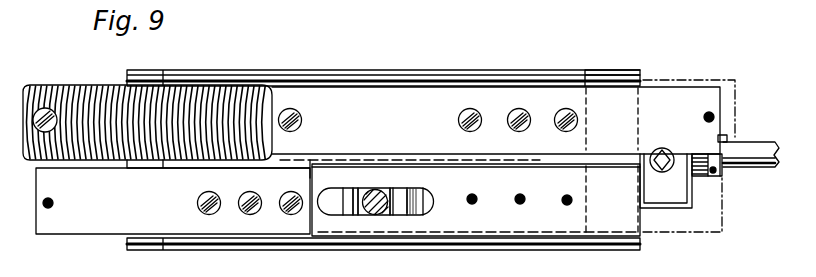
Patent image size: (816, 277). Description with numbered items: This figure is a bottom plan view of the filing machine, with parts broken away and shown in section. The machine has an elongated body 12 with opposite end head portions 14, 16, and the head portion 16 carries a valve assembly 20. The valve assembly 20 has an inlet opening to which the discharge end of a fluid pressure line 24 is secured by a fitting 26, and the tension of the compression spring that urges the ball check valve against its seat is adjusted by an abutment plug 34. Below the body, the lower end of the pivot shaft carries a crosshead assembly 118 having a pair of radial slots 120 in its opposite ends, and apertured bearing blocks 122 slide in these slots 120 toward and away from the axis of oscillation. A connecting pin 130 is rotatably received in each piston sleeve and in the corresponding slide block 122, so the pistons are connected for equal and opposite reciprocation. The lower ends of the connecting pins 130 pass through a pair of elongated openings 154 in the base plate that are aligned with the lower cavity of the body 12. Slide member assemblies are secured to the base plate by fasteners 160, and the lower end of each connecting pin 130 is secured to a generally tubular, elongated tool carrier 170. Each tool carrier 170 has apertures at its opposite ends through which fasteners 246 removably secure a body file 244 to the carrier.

The elongated body 12 is at (479, 69).
The head portion 14 is at (149, 69).
The head portion 16 is at (611, 63).
The valve assembly 20 is at (665, 211).
The fluid pressure line 24 is at (748, 146).
The fitting 26 is at (722, 177).
The abutment plug 34 is at (661, 173).
The crosshead assembly 118 is at (418, 202).
The radial slots 120 is at (395, 205).
The bearing blocks 122 is at (370, 209).
The connecting pin 130 is at (386, 196).
The elongated openings 154 is at (419, 189).
The fasteners 160 is at (292, 108).
The tool carrier 170 is at (388, 86).
The body file 244 is at (92, 85).
The fasteners 246 is at (43, 108).